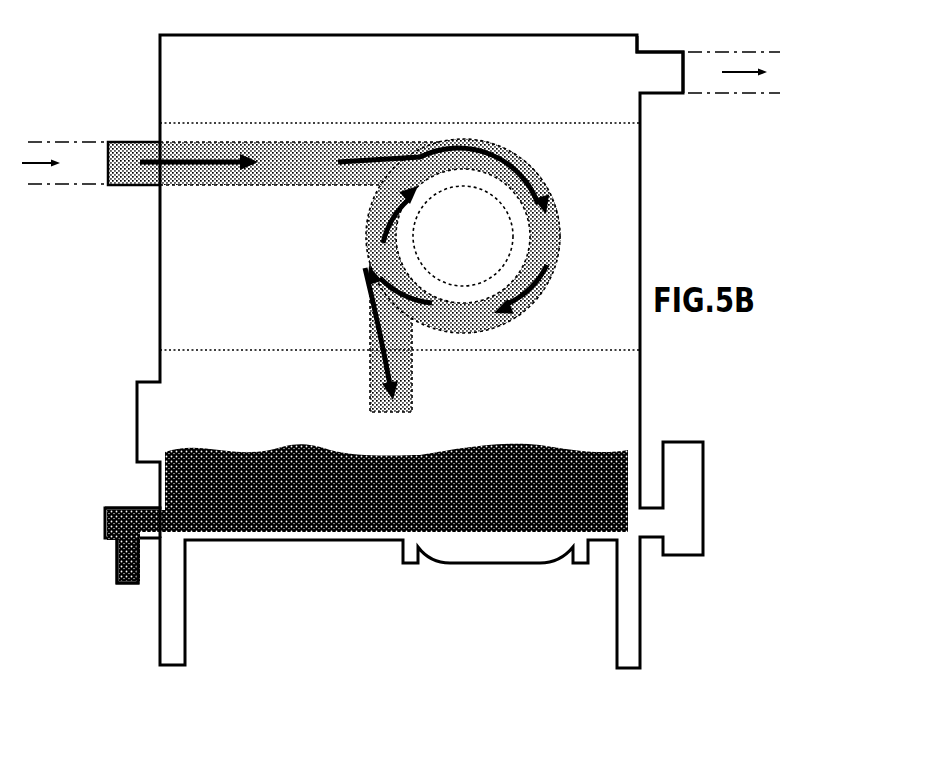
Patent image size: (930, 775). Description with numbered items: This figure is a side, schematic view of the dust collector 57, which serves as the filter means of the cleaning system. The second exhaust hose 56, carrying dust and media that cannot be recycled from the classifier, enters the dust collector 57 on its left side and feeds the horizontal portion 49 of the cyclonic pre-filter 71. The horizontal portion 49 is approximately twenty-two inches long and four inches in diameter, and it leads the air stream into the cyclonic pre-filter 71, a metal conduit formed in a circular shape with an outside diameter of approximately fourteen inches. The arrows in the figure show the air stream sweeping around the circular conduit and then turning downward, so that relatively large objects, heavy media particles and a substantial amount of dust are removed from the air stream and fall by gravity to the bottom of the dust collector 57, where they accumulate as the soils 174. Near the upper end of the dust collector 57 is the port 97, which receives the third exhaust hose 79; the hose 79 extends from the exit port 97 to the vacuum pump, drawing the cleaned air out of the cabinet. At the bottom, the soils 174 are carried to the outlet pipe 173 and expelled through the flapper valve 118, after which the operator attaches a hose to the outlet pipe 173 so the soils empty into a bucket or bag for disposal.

The second exhaust hose 56 is at (70, 152).
The horizontal portion of the cyclonic pre-filter 49 is at (302, 152).
The cyclonic pre-filter 71 is at (517, 182).
The port 97 is at (657, 56).
The third exhaust hose 79 is at (714, 65).
The dust collector 57 is at (683, 146).
The soils 174 is at (283, 440).
The flapper valve 118 is at (142, 508).
The outlet pipe 173 is at (125, 572).